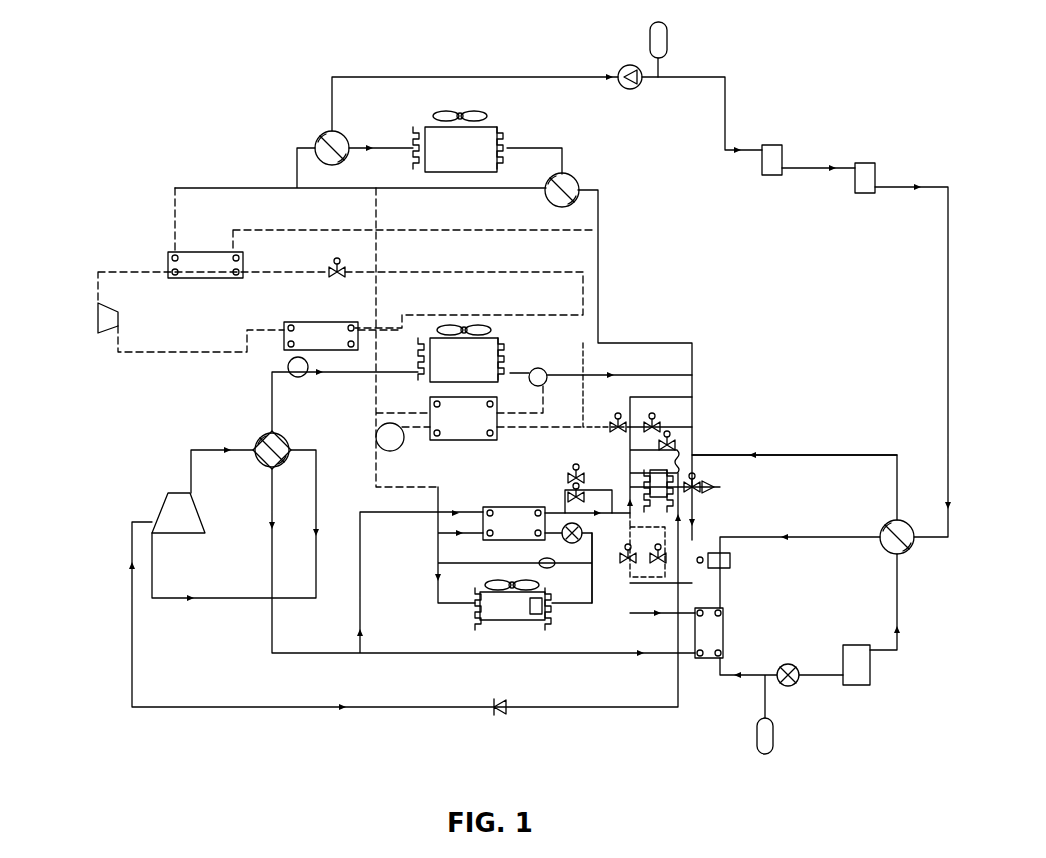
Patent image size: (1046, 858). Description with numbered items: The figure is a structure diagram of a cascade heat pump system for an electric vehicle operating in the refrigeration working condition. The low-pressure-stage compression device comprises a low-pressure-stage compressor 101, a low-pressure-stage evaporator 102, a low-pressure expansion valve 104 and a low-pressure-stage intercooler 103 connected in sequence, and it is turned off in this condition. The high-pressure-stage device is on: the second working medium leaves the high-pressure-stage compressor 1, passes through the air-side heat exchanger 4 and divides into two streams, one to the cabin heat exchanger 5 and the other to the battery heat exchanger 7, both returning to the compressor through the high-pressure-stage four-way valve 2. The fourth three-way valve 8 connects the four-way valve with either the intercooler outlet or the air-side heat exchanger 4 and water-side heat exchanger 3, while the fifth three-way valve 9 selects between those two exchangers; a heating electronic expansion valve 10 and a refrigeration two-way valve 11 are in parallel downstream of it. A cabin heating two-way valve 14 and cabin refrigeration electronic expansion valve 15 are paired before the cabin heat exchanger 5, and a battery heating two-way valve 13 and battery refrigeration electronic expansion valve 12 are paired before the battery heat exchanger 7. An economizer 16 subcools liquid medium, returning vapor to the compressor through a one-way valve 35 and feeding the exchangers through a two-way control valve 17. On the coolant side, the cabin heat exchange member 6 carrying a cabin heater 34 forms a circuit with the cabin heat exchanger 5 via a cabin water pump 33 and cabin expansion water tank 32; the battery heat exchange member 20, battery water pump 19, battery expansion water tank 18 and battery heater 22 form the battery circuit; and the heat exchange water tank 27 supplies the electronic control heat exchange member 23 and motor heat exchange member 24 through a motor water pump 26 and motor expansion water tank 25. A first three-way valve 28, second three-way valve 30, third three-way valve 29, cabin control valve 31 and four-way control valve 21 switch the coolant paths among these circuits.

The high-pressure-stage compressor 1 is at (178, 512).
The high-pressure-stage four-way valve 2 is at (262, 440).
The water-side heat exchanger 3 is at (470, 432).
The air-side heat exchanger 4 is at (490, 352).
The cabin heat exchanger 5 is at (505, 520).
The cabin heat exchange member 6 is at (508, 605).
The battery heat exchanger 7 is at (715, 632).
The fourth three-way valve 8 is at (288, 368).
The fifth three-way valve 9 is at (541, 368).
The heating electronic expansion valve 10 is at (622, 420).
The refrigeration two-way valve 11 is at (653, 420).
The battery refrigeration electronic expansion valve 12 is at (582, 533).
The battery heating two-way valve 13 is at (662, 552).
The cabin heating two-way valve 14 is at (578, 470).
The cabin refrigeration electronic expansion valve 15 is at (580, 492).
The economizer 16 is at (716, 489).
The two-way control valve 17 is at (672, 442).
The battery expansion water tank 18 is at (770, 740).
The battery water pump 19 is at (796, 684).
The battery heat exchange member 20 is at (860, 672).
The four-way control valve 21 is at (905, 548).
The battery heater 22 is at (728, 565).
The electronic control heat exchange member 23 is at (868, 170).
The motor heat exchange member 24 is at (775, 157).
The motor expansion water tank 25 is at (660, 40).
The motor water pump 26 is at (624, 68).
The heat exchange water tank 27 is at (460, 150).
The first three-way valve 28 is at (330, 140).
The third three-way valve 29 is at (568, 185).
The second three-way valve 30 is at (395, 448).
The cabin control valve 31 is at (745, 452).
The cabin expansion water tank 32 is at (540, 562).
The cabin water pump 33 is at (578, 548).
The cabin heater 34 is at (540, 610).
The one-way valve 35 is at (506, 710).
The low-pressure-stage compressor 101 is at (98, 312).
The low-pressure-stage evaporator 102 is at (195, 265).
The low-pressure-stage intercooler 103 is at (308, 330).
The low-pressure expansion valve 104 is at (342, 262).